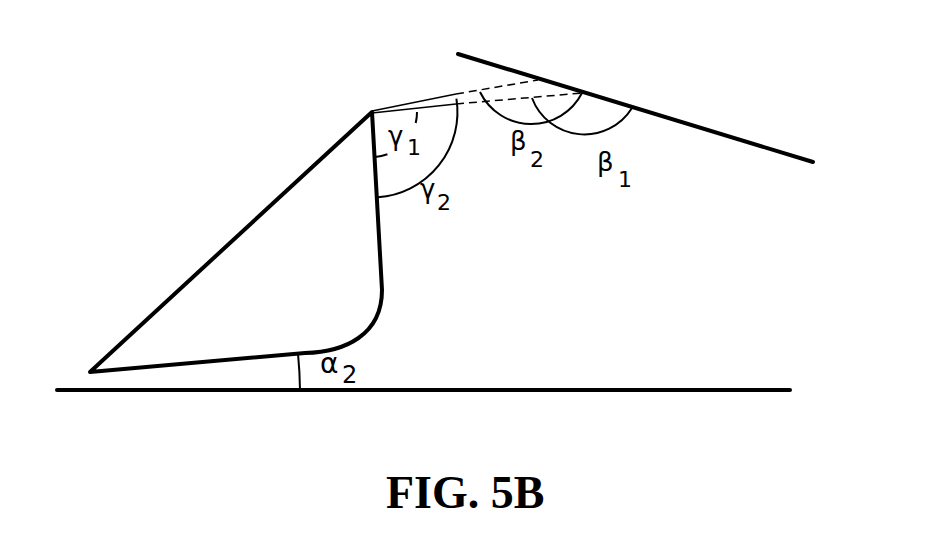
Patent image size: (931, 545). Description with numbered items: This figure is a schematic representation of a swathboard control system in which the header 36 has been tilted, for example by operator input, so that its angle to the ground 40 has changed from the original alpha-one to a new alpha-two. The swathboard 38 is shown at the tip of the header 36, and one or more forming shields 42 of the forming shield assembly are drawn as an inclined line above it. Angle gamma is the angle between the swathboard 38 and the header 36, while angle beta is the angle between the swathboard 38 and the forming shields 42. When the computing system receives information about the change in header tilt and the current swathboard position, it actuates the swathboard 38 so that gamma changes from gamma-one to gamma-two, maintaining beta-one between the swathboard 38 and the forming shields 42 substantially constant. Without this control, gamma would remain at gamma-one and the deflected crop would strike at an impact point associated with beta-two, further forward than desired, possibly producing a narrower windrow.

The header 36 is at (316, 283).
The swathboard 38 is at (423, 107).
The ground 40 is at (605, 392).
The forming shield 42 is at (752, 144).